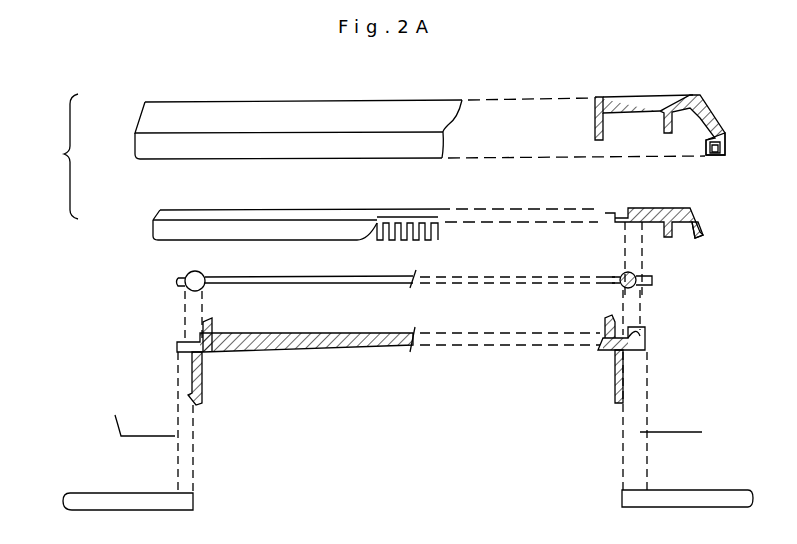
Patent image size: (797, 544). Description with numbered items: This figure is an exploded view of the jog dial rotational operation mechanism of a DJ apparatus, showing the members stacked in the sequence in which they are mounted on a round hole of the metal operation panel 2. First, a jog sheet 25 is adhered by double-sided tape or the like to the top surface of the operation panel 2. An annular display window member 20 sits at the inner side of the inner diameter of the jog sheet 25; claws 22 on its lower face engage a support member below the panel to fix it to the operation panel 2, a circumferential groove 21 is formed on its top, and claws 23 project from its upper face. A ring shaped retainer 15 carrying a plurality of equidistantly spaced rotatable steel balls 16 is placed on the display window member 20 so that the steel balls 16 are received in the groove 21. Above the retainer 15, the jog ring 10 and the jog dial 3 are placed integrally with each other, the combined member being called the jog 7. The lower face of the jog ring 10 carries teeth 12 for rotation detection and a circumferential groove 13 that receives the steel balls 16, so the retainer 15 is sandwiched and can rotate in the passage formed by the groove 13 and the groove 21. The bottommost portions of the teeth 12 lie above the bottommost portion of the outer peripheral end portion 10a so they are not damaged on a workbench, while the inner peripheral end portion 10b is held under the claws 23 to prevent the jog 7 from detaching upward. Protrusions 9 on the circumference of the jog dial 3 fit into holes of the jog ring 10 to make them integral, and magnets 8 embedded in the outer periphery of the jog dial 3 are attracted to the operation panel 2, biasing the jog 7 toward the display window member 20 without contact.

The operation panel 2 is at (80, 493).
The jog dial 3 is at (145, 103).
The jog 7 is at (55, 156).
The magnets 8 is at (716, 156).
The protrusions 9 is at (670, 134).
The jog ring 10 is at (153, 220).
The outer peripheral end portion 10a is at (703, 235).
The inner peripheral end portion 10b is at (612, 215).
The teeth 12 is at (408, 241).
The circumferential groove 13 is at (632, 216).
The retainer 15 is at (180, 278).
The steel balls 16 is at (187, 290).
The display window member 20 is at (177, 342).
The circumferential groove 21 is at (640, 332).
The claws 22 is at (624, 378).
The claws 23 is at (214, 325).
The jog sheet 25 is at (393, 420).